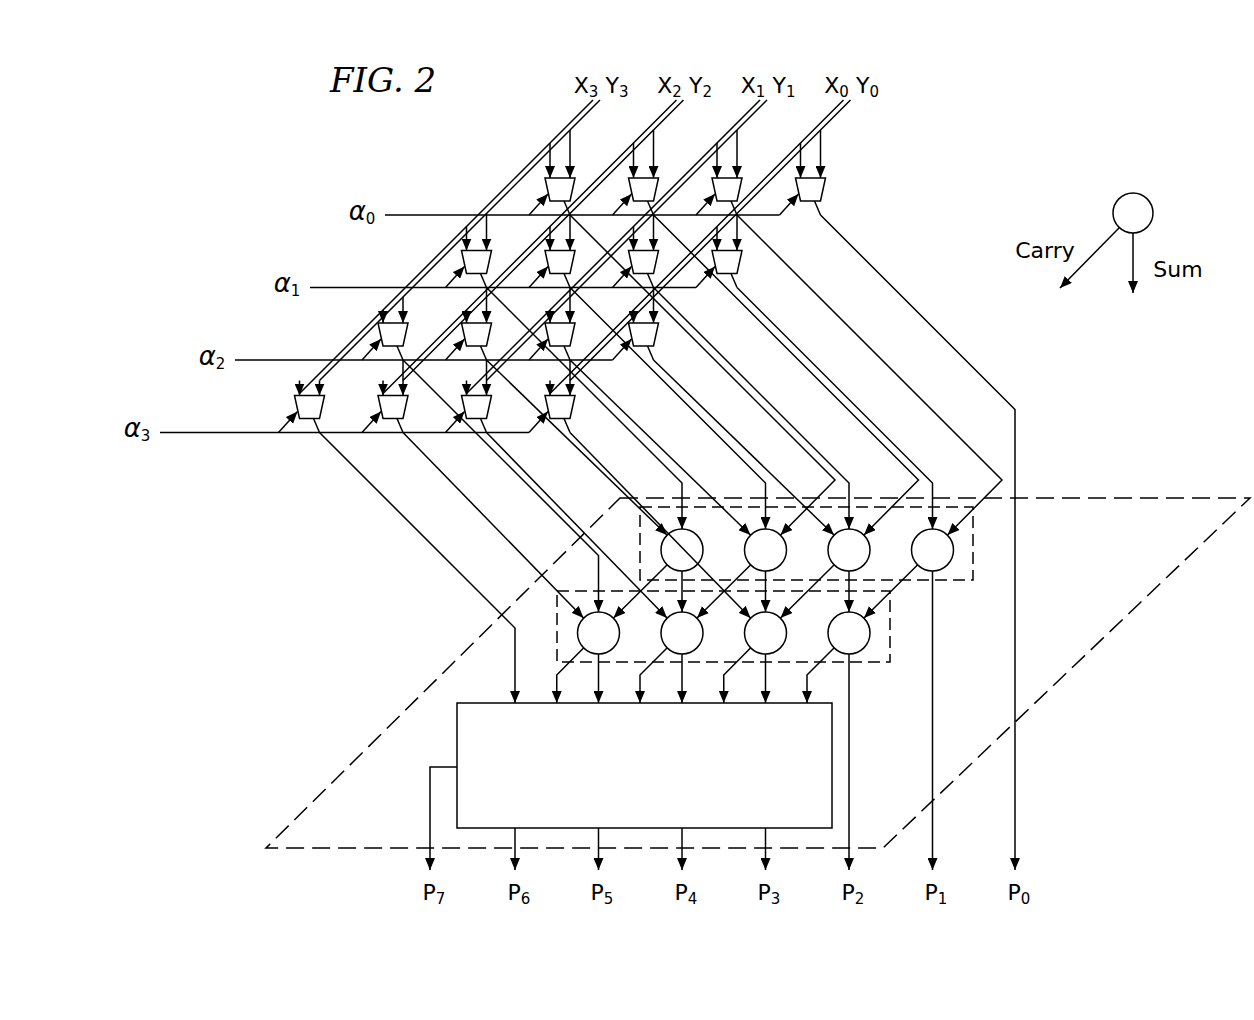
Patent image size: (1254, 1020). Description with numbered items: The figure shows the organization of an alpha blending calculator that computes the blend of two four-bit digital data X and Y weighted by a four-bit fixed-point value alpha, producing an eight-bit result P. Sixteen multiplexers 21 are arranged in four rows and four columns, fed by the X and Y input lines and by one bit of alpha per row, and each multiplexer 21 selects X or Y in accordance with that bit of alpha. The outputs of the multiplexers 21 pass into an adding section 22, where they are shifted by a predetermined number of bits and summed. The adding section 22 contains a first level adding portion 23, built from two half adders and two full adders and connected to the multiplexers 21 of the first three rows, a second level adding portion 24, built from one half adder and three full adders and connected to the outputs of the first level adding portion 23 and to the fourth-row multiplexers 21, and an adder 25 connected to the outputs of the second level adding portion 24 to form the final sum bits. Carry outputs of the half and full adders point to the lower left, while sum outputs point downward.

The multiplexer 21 is at (826, 190).
The adding section 22 is at (337, 776).
The first level adding portion 23 is at (973, 582).
The second level adding portion 24 is at (557, 638).
The adder 25 is at (457, 723).